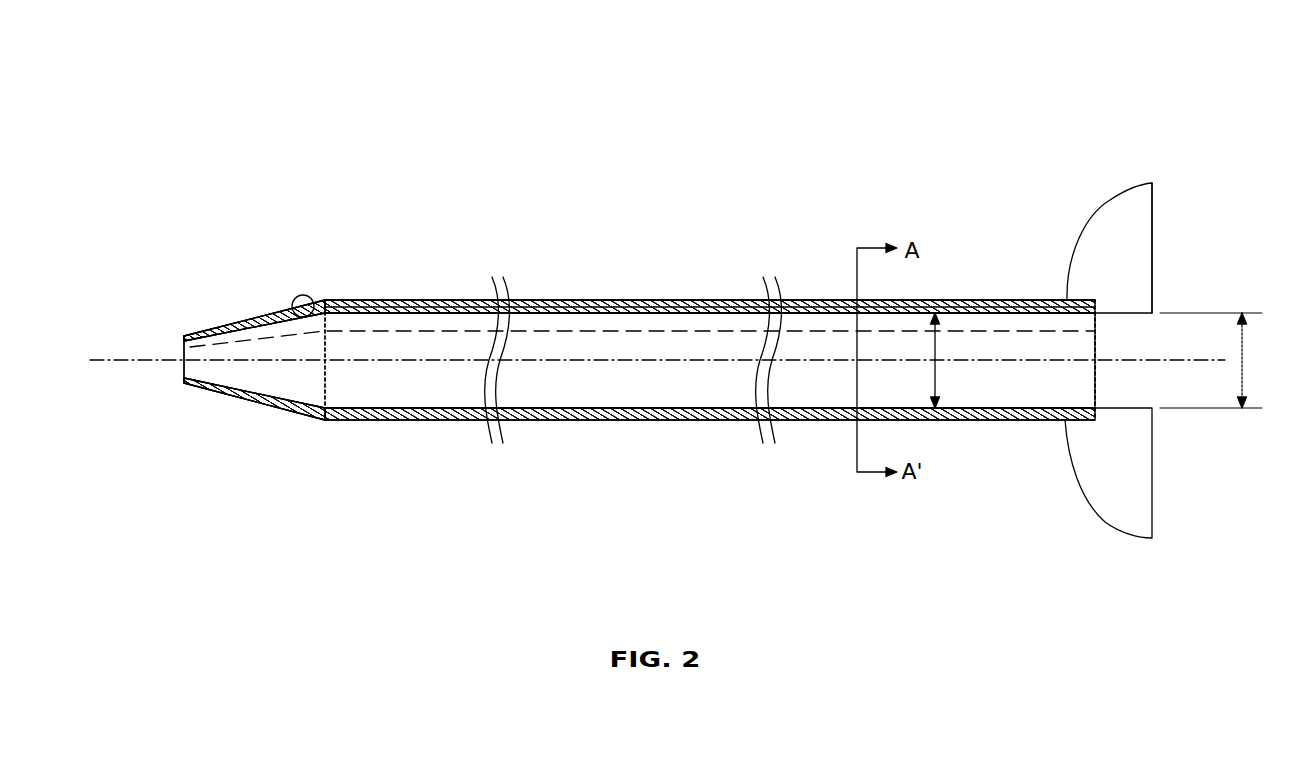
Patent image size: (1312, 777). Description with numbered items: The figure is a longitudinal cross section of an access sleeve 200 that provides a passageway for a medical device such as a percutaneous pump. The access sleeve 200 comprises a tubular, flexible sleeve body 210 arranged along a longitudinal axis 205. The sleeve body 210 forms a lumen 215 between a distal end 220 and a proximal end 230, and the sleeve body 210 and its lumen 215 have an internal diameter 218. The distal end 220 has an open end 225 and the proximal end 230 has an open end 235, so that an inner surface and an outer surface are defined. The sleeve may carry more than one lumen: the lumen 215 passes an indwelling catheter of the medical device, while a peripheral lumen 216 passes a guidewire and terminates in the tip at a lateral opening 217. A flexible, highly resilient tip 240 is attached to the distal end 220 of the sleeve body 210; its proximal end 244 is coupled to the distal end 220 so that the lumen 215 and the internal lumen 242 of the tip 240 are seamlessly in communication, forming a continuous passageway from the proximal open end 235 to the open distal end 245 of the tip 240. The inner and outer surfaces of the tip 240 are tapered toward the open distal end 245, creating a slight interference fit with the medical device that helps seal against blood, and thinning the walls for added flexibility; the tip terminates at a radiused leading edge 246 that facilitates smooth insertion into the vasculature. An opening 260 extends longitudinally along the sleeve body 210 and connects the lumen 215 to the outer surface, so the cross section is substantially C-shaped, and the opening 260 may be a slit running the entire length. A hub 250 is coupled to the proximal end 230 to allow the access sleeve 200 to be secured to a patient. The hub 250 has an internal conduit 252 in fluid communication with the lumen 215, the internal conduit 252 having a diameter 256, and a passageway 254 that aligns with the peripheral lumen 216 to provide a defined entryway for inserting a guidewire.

The access sleeve 200 is at (393, 167).
The longitudinal axis 205 is at (128, 358).
The sleeve body 210 is at (632, 421).
The lumen 215 is at (638, 383).
The peripheral lumen 216 is at (420, 300).
The lateral opening 217 is at (307, 294).
The internal diameter 218 is at (940, 390).
The distal end 220 is at (332, 300).
The open end 225 is at (325, 385).
The proximal end 230 is at (1062, 421).
The open end 235 is at (1093, 335).
The flexible tip 240 is at (263, 316).
The internal lumen 242 is at (255, 372).
The proximal end 244 is at (313, 421).
The open distal end 245 is at (183, 368).
The leading edge 246 is at (182, 338).
The hub 250 is at (1075, 253).
The internal conduit 252 is at (1138, 395).
The passageway 254 is at (1131, 303).
The diameter 256 is at (1228, 360).
The opening 260 is at (620, 331).